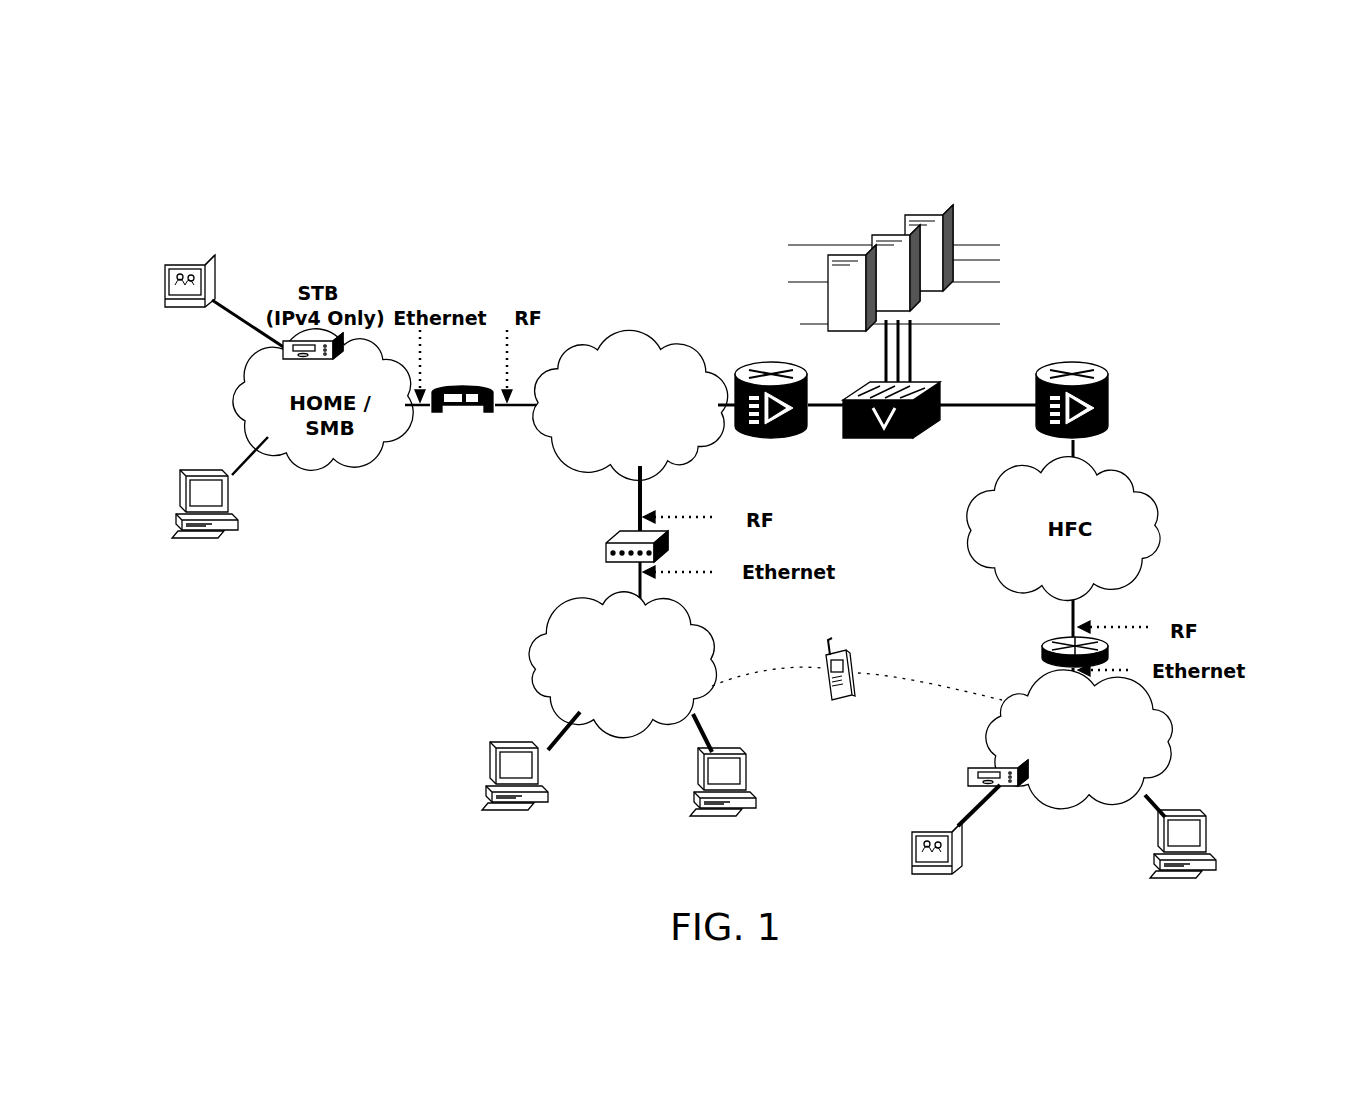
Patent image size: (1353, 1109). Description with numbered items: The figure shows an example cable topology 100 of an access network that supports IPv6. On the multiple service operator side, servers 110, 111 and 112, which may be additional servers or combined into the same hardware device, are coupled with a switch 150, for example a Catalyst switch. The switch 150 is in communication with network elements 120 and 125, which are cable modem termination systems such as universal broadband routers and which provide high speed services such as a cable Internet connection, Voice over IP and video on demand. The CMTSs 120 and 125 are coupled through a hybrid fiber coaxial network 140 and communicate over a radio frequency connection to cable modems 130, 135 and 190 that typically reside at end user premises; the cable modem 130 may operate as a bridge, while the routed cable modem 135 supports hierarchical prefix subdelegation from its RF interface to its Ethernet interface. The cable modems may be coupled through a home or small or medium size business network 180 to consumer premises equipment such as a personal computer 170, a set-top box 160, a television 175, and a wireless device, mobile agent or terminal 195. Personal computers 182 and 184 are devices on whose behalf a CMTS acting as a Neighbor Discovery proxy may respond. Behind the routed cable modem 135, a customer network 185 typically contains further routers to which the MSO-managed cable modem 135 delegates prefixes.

The cable topology 100 is at (1130, 212).
The server 110 is at (836, 248).
The server 111 is at (888, 229).
The server 112 is at (935, 207).
The network element 120 is at (752, 368).
The network element 125 is at (1108, 392).
The cable modem 130 is at (606, 556).
The cable modem 135 is at (1045, 650).
The hybrid fiber coaxial network 140 is at (628, 350).
The switch 150 is at (884, 440).
The set-top box 160 is at (975, 765).
The personal computer 170 is at (1205, 826).
The television 175 is at (915, 845).
The home or small or medium size business network 180 is at (536, 667).
The personal computer 182 is at (497, 774).
The personal computer 184 is at (695, 808).
The customer network 185 is at (1170, 745).
The cable modem 190 is at (468, 383).
The mobile agent or terminal 195 is at (843, 650).